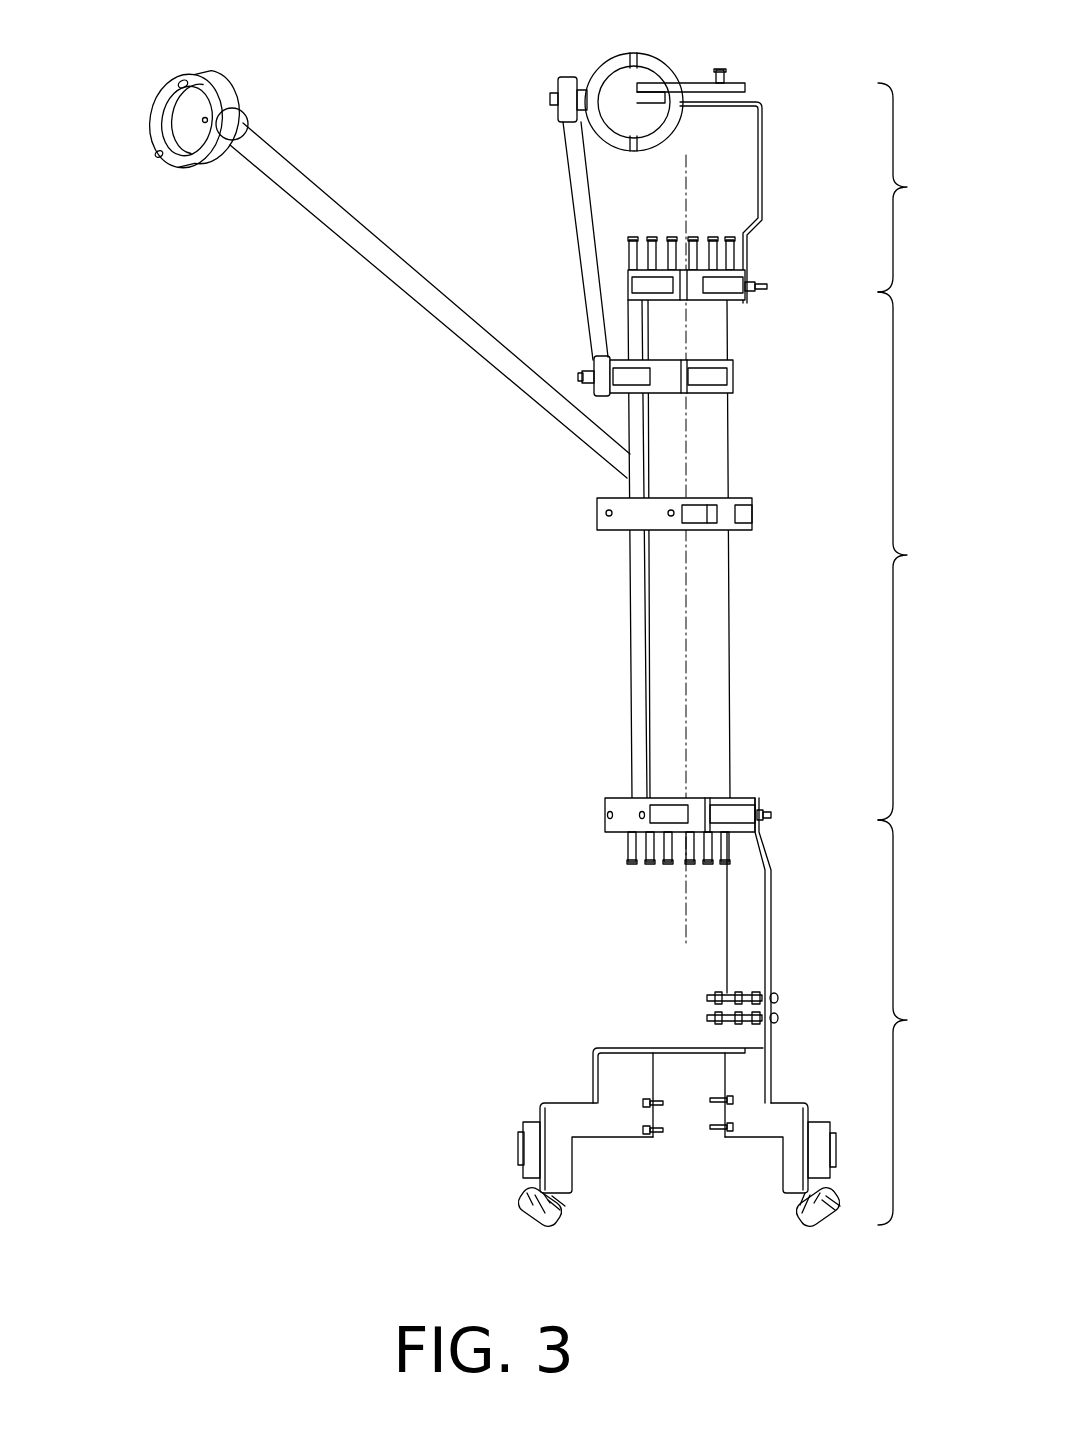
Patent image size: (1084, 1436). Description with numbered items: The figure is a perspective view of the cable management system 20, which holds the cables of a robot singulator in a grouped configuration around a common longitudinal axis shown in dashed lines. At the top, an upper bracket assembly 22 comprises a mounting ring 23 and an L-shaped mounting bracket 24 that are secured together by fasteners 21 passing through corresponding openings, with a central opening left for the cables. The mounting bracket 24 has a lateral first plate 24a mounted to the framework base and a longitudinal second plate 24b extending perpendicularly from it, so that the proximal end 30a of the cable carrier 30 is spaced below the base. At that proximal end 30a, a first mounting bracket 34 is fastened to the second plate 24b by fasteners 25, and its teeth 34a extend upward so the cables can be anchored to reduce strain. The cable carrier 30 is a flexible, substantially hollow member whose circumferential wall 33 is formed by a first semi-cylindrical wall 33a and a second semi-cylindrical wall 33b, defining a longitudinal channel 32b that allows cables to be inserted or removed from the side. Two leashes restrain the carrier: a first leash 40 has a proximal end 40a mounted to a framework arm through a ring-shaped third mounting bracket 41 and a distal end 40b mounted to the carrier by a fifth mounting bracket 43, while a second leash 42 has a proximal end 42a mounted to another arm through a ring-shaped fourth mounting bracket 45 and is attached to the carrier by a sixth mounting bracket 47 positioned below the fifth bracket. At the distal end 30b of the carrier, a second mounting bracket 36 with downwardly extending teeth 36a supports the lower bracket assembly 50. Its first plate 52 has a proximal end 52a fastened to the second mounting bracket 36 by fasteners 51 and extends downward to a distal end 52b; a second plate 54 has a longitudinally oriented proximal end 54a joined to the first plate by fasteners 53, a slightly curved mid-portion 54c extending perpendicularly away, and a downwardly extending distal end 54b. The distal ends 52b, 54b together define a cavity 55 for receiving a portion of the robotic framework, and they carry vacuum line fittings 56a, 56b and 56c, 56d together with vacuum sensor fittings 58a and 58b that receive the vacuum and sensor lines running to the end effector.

The cable management system 20 is at (126, 45).
The fasteners 21 is at (722, 70).
The upper bracket assembly 22 is at (909, 187).
The mounting ring 23 is at (697, 80).
The mounting bracket 24 is at (767, 138).
The first plate 24a is at (750, 103).
The second plate 24b is at (767, 175).
The fasteners 25 is at (768, 287).
The cable carrier 30 is at (908, 556).
The proximal end 30a is at (624, 279).
The distal end 30b is at (605, 820).
The longitudinal channel 32b is at (647, 770).
The circumferential wall 33 is at (728, 573).
The first semi-cylindrical wall 33a is at (636, 723).
The second semi-cylindrical wall 33b is at (709, 655).
The first mounting bracket 34 is at (736, 300).
The teeth 34a is at (672, 237).
The second mounting bracket 36 is at (620, 822).
The teeth 36a is at (668, 864).
The first leash 40 is at (578, 272).
The proximal end 40a is at (565, 108).
The distal end 40b is at (598, 372).
The third mounting bracket 41 is at (601, 68).
The second leash 42 is at (363, 226).
The proximal end 42a is at (246, 110).
The fifth mounting bracket 43 is at (734, 375).
The fourth mounting bracket 45 is at (149, 122).
The sixth mounting bracket 47 is at (599, 523).
The lower bracket assembly 50 is at (908, 1022).
The fasteners 51 is at (771, 815).
The first plate 52 is at (753, 905).
The proximal end 52a is at (756, 798).
The distal end 52b is at (793, 1175).
The fasteners 53 is at (700, 1018).
The second plate 54 is at (610, 1048).
The proximal end 54a is at (750, 1043).
The distal end 54b is at (560, 1153).
The mid-portion 54c is at (650, 1048).
The cavity 55 is at (685, 1200).
The vacuum line fitting 56a is at (840, 1216).
The vacuum line fitting 56b is at (812, 1218).
The vacuum line fitting 56c is at (533, 1224).
The vacuum line fitting 56d is at (555, 1222).
The vacuum sensor fitting 58a is at (834, 1148).
The vacuum sensor fitting 58b is at (519, 1157).